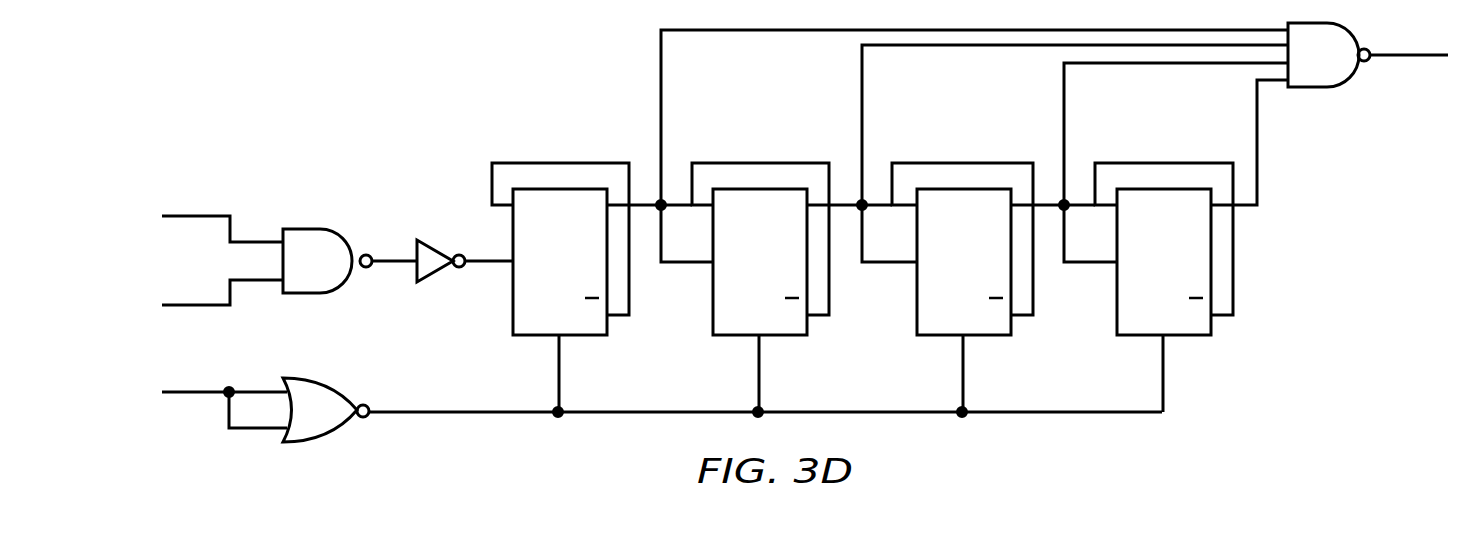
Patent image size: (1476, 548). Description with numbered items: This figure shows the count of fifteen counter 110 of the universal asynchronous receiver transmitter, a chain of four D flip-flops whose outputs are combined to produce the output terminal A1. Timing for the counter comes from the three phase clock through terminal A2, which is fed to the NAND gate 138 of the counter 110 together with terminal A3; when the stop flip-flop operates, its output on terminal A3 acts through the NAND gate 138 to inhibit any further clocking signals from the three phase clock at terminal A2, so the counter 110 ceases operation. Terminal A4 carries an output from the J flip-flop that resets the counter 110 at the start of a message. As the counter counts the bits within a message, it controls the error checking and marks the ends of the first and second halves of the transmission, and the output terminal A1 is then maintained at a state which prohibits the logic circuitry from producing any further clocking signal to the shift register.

The NAND gate 138 is at (333, 229).
The count of 15 counter 110 is at (1248, 261).
The output terminal A1 is at (1423, 55).
The terminal A2 is at (205, 220).
The terminal A3 is at (205, 301).
The terminal A4 is at (207, 401).